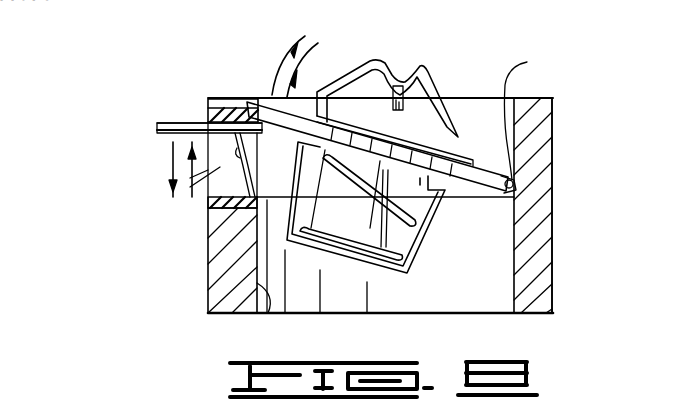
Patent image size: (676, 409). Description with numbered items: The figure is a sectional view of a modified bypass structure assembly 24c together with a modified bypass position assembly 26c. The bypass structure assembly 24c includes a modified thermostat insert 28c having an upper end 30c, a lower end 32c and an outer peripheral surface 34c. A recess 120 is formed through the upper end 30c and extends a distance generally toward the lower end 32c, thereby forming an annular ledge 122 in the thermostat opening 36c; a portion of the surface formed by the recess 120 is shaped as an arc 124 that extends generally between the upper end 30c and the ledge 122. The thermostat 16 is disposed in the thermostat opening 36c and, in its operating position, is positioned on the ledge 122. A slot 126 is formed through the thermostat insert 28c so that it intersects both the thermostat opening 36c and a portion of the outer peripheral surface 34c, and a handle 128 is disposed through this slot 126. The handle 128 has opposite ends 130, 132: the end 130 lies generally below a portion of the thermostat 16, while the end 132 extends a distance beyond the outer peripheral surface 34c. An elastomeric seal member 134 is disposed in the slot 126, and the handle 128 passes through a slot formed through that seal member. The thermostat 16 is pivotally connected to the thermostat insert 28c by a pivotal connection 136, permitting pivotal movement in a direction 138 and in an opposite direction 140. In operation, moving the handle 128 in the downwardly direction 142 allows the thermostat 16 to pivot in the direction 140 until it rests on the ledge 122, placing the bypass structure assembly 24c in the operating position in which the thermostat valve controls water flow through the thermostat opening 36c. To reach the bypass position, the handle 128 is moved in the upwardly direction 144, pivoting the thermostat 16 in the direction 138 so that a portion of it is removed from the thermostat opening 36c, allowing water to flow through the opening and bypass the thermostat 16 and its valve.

The thermostat 16 is at (381, 143).
The modified bypass structure assembly 24c is at (381, 205).
The modified bypass position assembly 26c is at (136, 104).
The modified thermostat insert 28c is at (535, 150).
The upper end 30c is at (536, 98).
The lower end 32c is at (535, 313).
The outer peripheral surface 34c is at (552, 193).
The thermostat opening 36c is at (277, 313).
The recess 120 is at (534, 115).
The annular ledge 122 is at (498, 198).
The arc 124 is at (218, 196).
The slot 126 is at (208, 106).
The handle 128 is at (157, 132).
The end of handle 130 is at (258, 136).
The end of handle 132 is at (157, 127).
The elastomeric seal member 134 is at (210, 228).
The pivotal connection 136 is at (192, 176).
The direction 138 is at (288, 51).
The opposite direction 140 is at (292, 68).
The downwardly direction 142 is at (173, 152).
The upwardly direction 144 is at (213, 170).